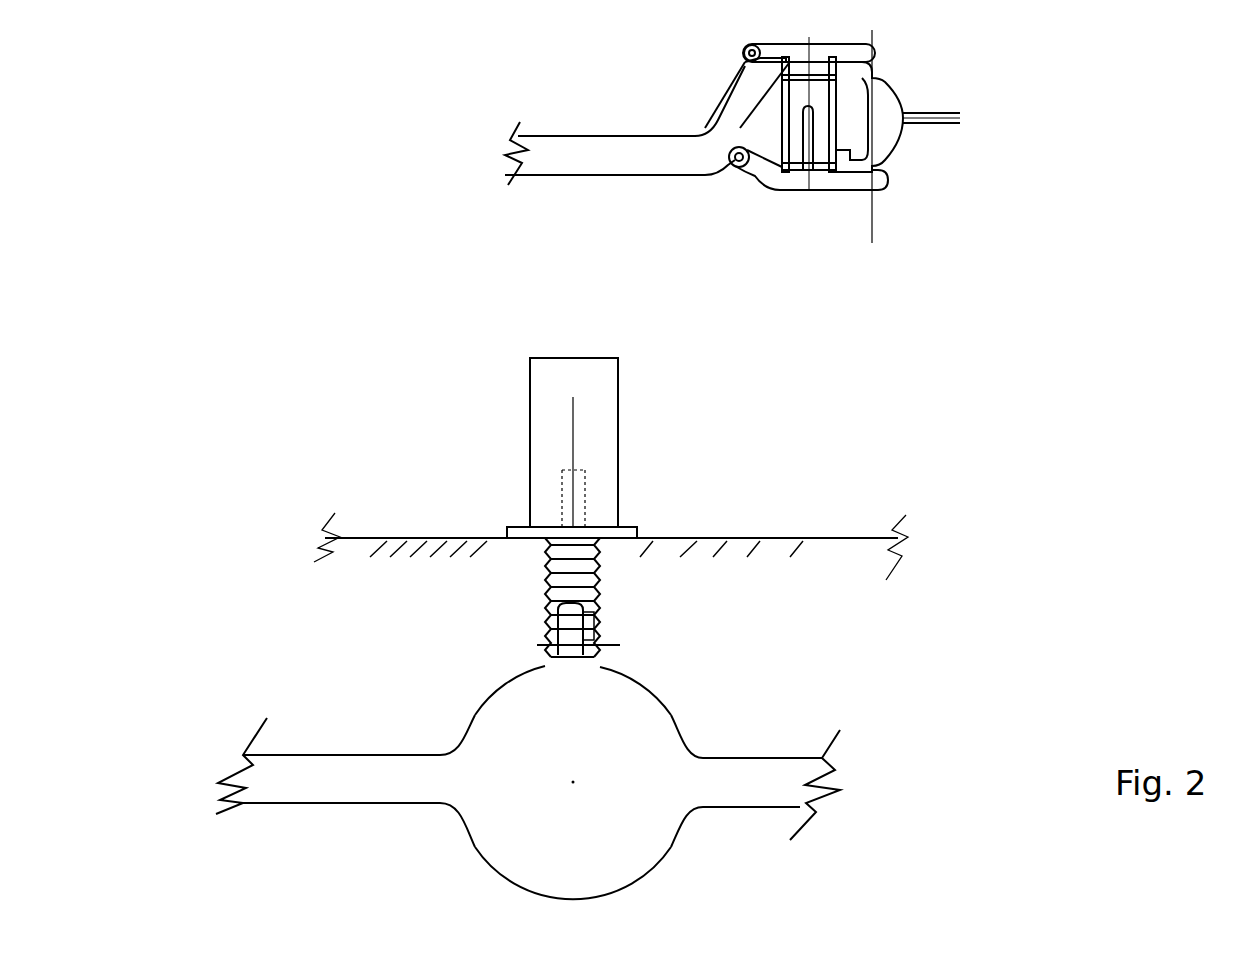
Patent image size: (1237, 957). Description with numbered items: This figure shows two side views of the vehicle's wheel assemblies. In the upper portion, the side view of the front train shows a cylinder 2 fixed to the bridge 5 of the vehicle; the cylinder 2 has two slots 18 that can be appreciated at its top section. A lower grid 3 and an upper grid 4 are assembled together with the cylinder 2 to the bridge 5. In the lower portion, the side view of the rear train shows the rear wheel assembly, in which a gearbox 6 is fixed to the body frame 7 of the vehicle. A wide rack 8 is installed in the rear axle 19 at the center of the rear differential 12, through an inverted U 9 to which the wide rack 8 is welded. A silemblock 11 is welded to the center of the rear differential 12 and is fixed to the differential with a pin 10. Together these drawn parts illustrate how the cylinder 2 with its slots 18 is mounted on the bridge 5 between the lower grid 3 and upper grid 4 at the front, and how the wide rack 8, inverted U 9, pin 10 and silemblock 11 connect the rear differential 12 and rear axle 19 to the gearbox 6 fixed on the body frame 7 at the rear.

The cylinder 2 is at (786, 118).
The lower grid 3 is at (808, 168).
The upper grid 4 is at (857, 52).
The bridge 5 is at (625, 125).
The gearbox 6 is at (548, 393).
The body frame 7 is at (690, 540).
The wide rack 8 is at (552, 576).
The inverted U 9 is at (590, 640).
The pin 10 is at (603, 648).
The silemblock 11 is at (553, 641).
The rear differential 12 is at (657, 782).
The slots 18 is at (812, 128).
The rear axle 19 is at (345, 781).